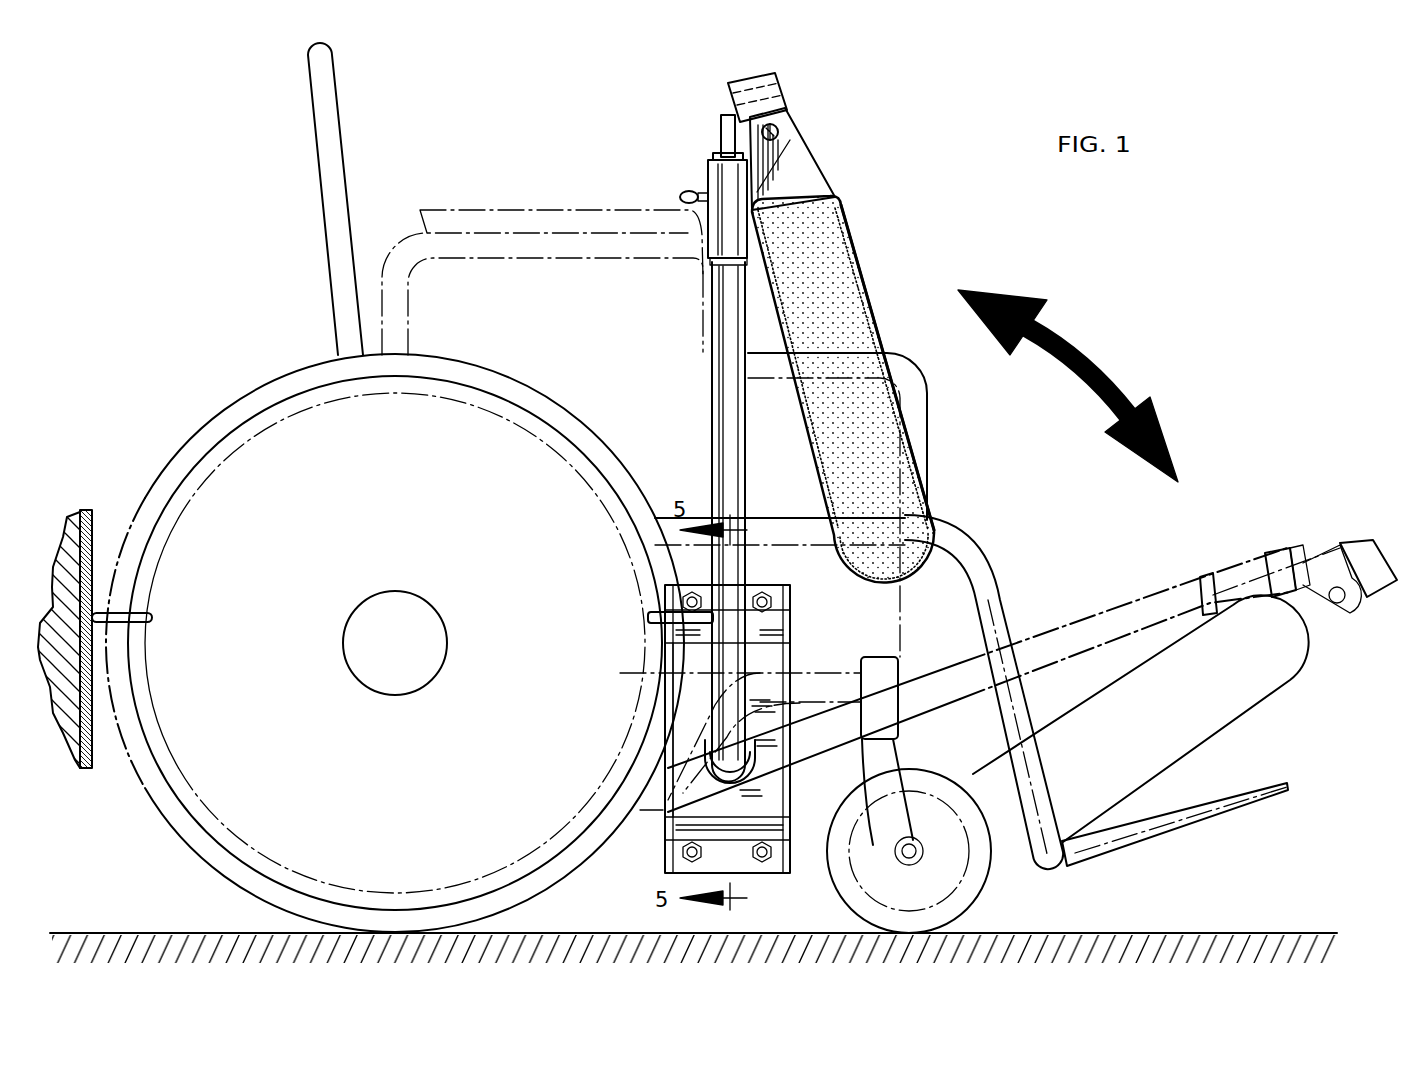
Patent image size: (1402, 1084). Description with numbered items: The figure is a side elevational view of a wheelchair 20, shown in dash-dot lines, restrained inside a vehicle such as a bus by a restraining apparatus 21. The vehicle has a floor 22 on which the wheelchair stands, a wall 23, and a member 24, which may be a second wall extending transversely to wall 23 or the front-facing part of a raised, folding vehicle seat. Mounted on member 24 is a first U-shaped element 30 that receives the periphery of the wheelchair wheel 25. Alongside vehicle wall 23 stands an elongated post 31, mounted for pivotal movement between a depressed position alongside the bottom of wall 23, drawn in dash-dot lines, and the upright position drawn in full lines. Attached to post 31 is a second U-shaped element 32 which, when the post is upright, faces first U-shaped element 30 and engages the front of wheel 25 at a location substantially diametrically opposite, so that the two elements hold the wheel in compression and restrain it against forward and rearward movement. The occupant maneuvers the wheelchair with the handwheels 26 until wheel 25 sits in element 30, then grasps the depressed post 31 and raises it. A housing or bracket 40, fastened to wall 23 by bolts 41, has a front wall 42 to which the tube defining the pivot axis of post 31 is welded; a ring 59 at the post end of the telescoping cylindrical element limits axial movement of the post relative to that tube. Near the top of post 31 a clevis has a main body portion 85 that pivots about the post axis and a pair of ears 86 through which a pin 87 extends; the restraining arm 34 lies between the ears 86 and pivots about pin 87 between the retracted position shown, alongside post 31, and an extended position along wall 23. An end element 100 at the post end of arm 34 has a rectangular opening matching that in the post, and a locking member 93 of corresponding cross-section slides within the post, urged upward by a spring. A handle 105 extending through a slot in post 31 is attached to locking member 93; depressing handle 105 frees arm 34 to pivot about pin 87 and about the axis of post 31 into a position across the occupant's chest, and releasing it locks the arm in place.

The wheelchair 20 is at (327, 201).
The restraining apparatus 21 is at (663, 488).
The floor 22 is at (1172, 922).
The wall 23 is at (960, 748).
The member 24 is at (92, 512).
The wheelchair wheel 25 is at (245, 390).
The handwheels 26 is at (412, 395).
The first U-shaped element 30 is at (153, 611).
The post 31 is at (712, 360).
The second U-shaped element 32 is at (648, 617).
The restraining arm 34 is at (805, 187).
The housing or bracket 40 is at (726, 726).
The bolts 41 is at (772, 602).
The front wall 42 is at (665, 670).
The ring 59 is at (712, 770).
The main body portion 85 is at (710, 167).
The ears 86 is at (787, 140).
The pin 87 is at (777, 131).
The locking member 93 is at (725, 130).
The end element 100 is at (787, 93).
The handle 105 is at (680, 197).